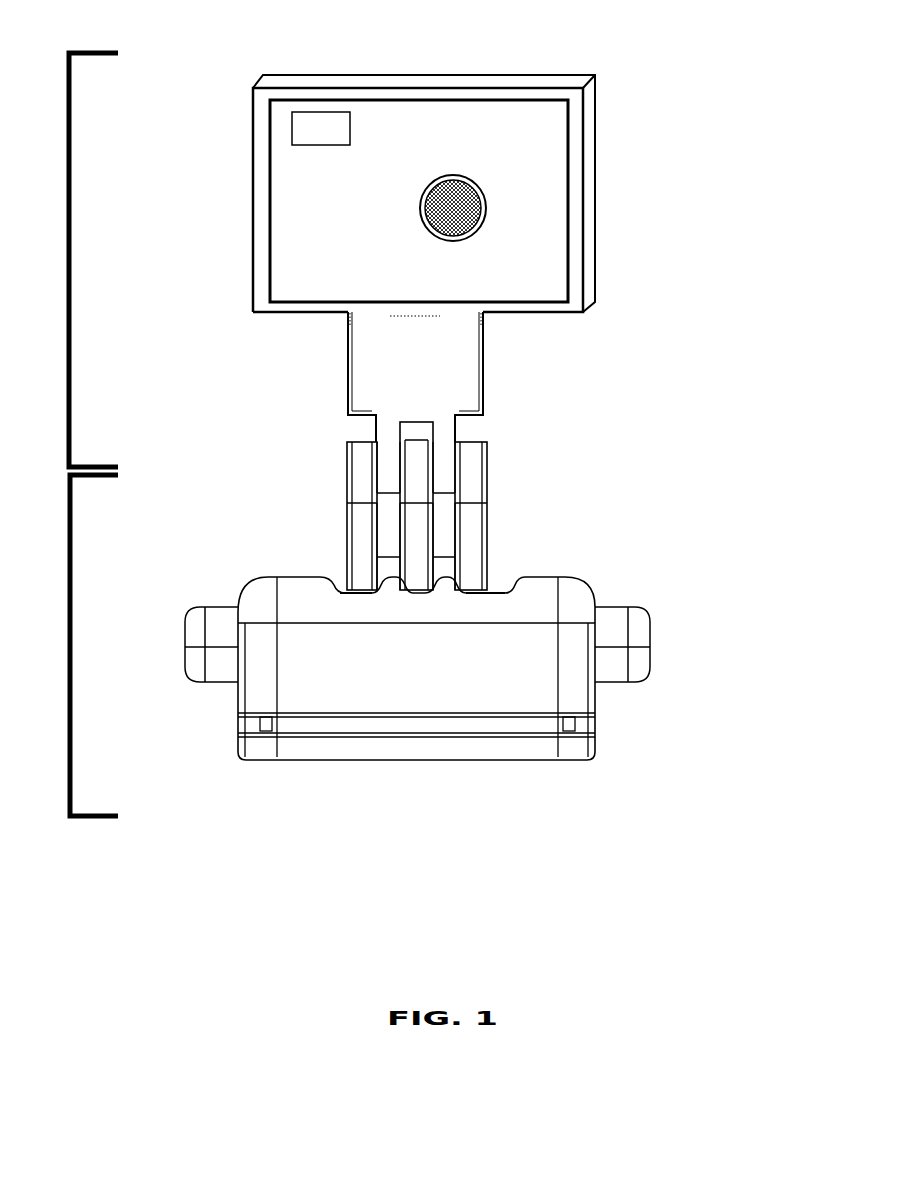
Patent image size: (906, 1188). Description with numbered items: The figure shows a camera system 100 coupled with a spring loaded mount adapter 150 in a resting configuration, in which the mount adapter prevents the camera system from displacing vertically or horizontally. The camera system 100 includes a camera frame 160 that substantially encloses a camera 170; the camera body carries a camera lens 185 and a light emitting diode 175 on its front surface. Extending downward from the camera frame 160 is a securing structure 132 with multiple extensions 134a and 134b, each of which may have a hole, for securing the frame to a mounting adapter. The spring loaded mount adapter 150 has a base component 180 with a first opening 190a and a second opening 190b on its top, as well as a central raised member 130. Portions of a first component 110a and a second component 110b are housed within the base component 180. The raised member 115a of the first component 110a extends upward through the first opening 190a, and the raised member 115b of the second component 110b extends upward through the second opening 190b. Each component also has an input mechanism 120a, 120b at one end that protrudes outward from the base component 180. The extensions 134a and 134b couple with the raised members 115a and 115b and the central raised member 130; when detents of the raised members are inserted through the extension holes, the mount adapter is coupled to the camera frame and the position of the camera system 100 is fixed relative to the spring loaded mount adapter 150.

The camera system 100 is at (49, 291).
The spring loaded mount adapter 150 is at (49, 656).
The camera frame 160 is at (592, 182).
The camera 170 is at (452, 128).
The light emitting diode 175 is at (313, 133).
The camera lens 185 is at (437, 208).
The securing structure 132 is at (430, 372).
The extension 134a is at (445, 470).
The extension 134b is at (392, 476).
The raised member 115a is at (490, 500).
The raised member 115b is at (340, 511).
The central raised member 130 is at (415, 530).
The first component 110a is at (492, 557).
The second component 110b is at (342, 560).
The input mechanism 120a is at (185, 639).
The input mechanism 120b is at (660, 637).
The base component 180 is at (416, 668).
The first opening 190a is at (492, 600).
The second opening 190b is at (340, 600).